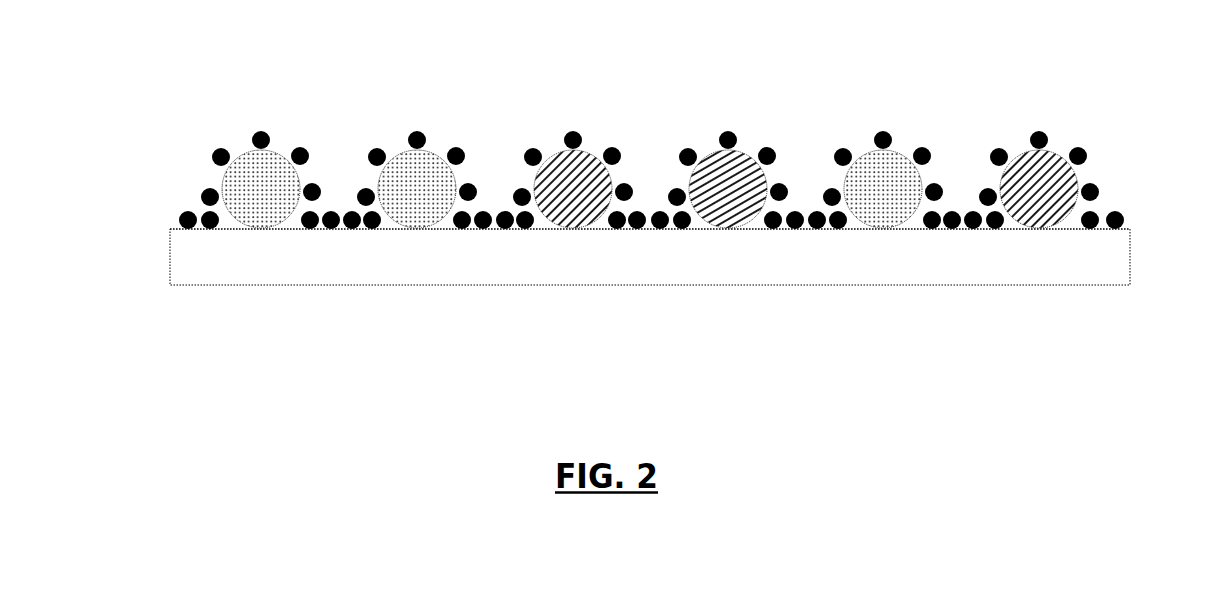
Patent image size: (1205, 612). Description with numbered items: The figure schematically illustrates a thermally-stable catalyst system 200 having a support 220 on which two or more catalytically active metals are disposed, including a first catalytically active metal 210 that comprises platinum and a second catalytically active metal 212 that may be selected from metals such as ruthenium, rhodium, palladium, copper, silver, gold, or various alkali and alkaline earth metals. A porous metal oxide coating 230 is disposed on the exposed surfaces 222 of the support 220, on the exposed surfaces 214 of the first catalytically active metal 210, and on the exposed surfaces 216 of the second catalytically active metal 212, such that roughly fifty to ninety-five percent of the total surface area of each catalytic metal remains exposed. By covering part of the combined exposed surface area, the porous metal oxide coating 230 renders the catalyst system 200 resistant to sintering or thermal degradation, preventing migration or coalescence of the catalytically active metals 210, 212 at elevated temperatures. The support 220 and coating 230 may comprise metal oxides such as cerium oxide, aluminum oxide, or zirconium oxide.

The thermally-stable catalyst system 200 is at (196, 72).
The first catalytically active metal 210 is at (600, 144).
The second catalytically active metal 212 is at (910, 144).
The exposed surfaces of the first catalytically active metal 214 is at (1057, 157).
The exposed surfaces of the second catalytically active metal 216 is at (397, 153).
The support 220 is at (650, 285).
The exposed surfaces of the support 222 is at (220, 229).
The porous metal oxide coating 230 is at (212, 162).